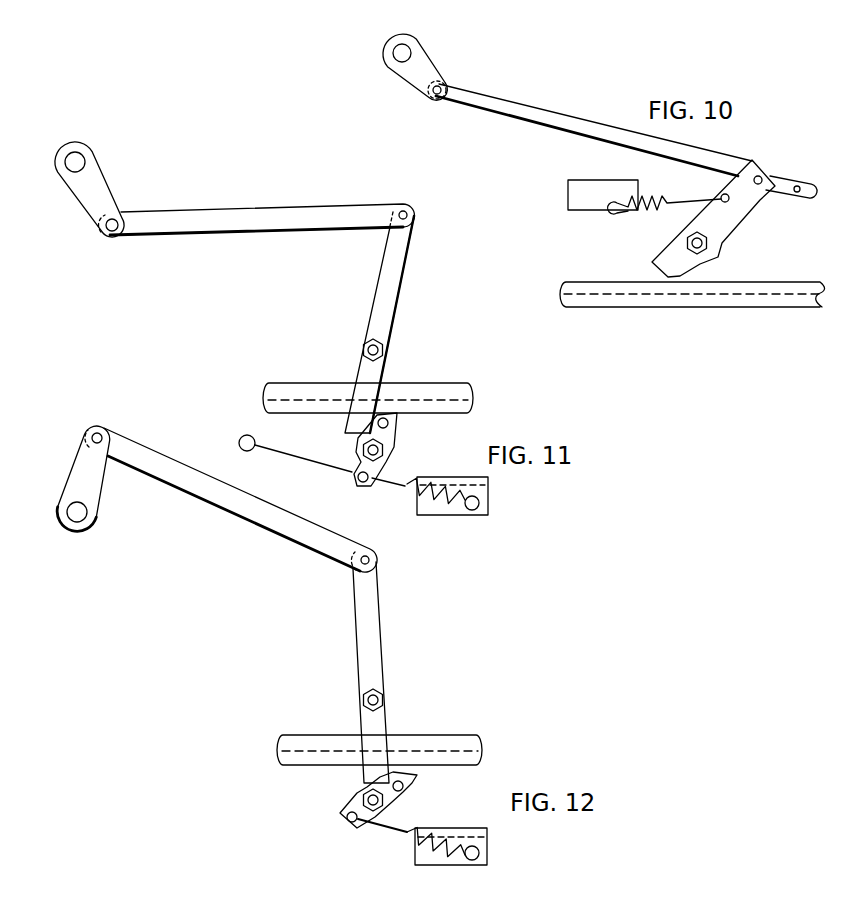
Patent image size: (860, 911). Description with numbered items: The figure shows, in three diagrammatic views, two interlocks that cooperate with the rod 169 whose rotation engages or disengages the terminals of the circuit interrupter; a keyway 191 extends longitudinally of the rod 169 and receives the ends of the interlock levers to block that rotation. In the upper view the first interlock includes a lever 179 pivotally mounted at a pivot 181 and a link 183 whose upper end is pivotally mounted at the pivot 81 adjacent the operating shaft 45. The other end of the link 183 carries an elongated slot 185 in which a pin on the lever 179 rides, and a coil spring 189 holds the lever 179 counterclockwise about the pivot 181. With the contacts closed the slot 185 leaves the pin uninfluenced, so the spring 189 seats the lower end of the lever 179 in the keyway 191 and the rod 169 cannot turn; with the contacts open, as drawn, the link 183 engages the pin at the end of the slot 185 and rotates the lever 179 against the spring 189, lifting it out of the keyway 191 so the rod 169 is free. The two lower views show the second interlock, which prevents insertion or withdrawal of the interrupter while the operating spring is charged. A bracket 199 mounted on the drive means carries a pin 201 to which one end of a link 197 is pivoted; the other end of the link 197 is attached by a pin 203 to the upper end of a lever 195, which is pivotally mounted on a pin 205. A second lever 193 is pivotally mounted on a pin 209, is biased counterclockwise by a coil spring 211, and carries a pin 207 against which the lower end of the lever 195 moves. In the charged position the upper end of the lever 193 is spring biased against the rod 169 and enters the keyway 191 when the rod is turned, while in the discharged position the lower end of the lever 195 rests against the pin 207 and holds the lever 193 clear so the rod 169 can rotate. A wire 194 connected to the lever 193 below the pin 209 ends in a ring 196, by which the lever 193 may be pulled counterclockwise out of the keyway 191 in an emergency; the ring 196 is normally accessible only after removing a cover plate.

In FIG. 10, the operating shaft 45 is at (392, 51).
In FIG. 11, the operating shaft 45 is at (82, 158).
In FIG. 12, the operating shaft 45 is at (66, 512).
In FIG. 10, the pivot pin 81 is at (443, 83).
In FIG. 10, the rod 169 is at (750, 305).
In FIG. 11, the rod 169 is at (303, 382).
In FIG. 12, the rod 169 is at (452, 737).
In FIG. 10, the lever 179 is at (753, 198).
In FIG. 10, the pivot 181 is at (684, 243).
In FIG. 10, the link 183 is at (570, 118).
In FIG. 10, the elongated slot 185 is at (794, 187).
In FIG. 10, the coil spring 189 is at (617, 205).
In FIG. 10, the keyway 191 is at (604, 290).
In FIG. 11, the keyway 191 is at (462, 405).
In FIG. 12, the keyway 191 is at (467, 755).
In FIG. 11, the lever 193 is at (392, 442).
In FIG. 12, the lever 193 is at (404, 794).
In FIG. 11, the wire 194 is at (338, 470).
In FIG. 11, the lever 195 is at (407, 270).
In FIG. 12, the lever 195 is at (374, 602).
In FIG. 11, the ring 196 is at (260, 458).
In FIG. 11, the link 197 is at (256, 230).
In FIG. 12, the link 197 is at (183, 490).
In FIG. 10, the bracket 199 is at (420, 62).
In FIG. 11, the bracket 199 is at (98, 178).
In FIG. 12, the bracket 199 is at (76, 468).
In FIG. 11, the pin 201 is at (108, 236).
In FIG. 12, the pin 201 is at (104, 437).
In FIG. 11, the pin 203 is at (414, 213).
In FIG. 12, the pin 203 is at (377, 560).
In FIG. 11, the pin 205 is at (386, 350).
In FIG. 12, the pin 205 is at (387, 697).
In FIG. 11, the pin 207 is at (396, 424).
In FIG. 12, the pin 207 is at (418, 778).
In FIG. 11, the pin 209 is at (362, 450).
In FIG. 12, the pin 209 is at (360, 792).
In FIG. 11, the coil spring 211 is at (408, 492).
In FIG. 12, the coil spring 211 is at (407, 840).